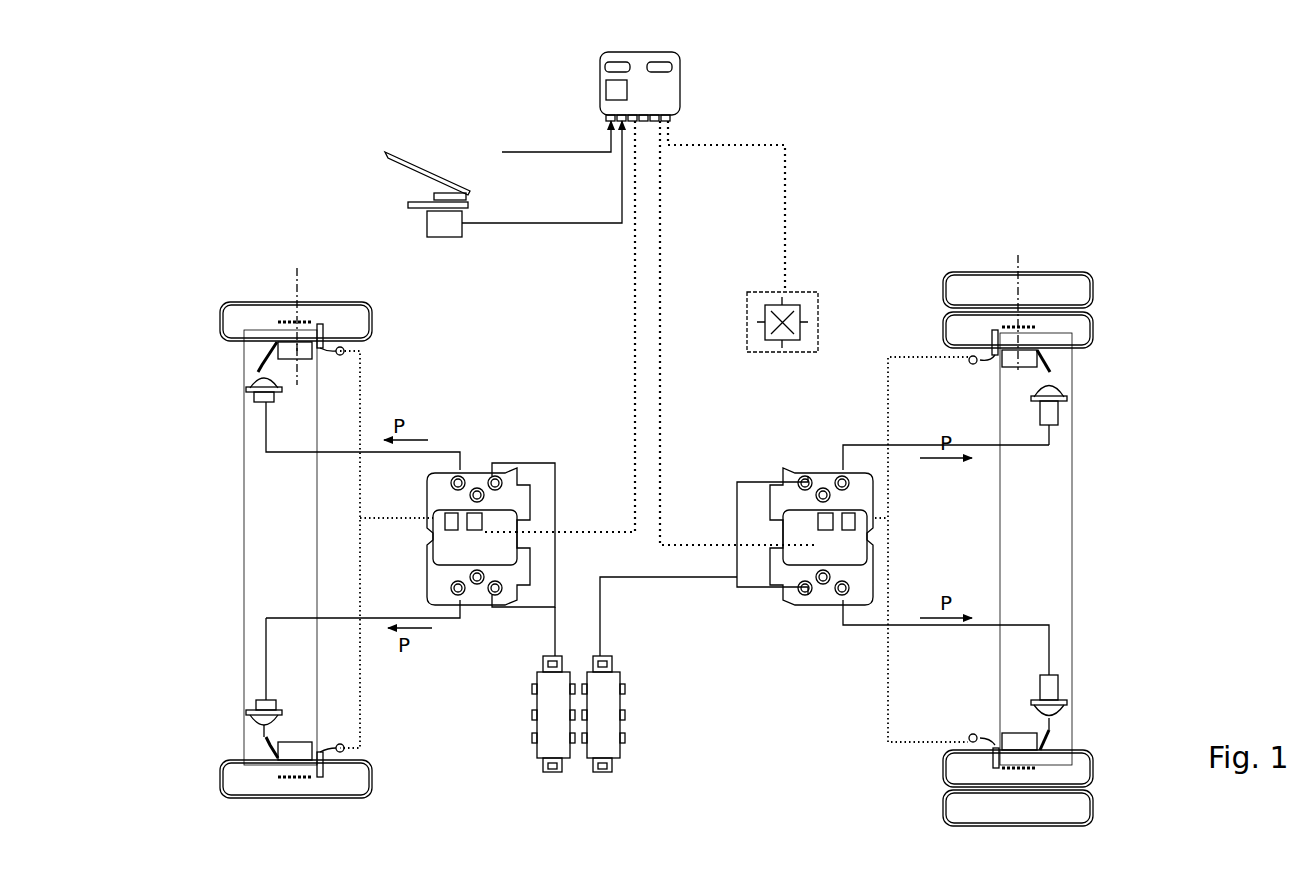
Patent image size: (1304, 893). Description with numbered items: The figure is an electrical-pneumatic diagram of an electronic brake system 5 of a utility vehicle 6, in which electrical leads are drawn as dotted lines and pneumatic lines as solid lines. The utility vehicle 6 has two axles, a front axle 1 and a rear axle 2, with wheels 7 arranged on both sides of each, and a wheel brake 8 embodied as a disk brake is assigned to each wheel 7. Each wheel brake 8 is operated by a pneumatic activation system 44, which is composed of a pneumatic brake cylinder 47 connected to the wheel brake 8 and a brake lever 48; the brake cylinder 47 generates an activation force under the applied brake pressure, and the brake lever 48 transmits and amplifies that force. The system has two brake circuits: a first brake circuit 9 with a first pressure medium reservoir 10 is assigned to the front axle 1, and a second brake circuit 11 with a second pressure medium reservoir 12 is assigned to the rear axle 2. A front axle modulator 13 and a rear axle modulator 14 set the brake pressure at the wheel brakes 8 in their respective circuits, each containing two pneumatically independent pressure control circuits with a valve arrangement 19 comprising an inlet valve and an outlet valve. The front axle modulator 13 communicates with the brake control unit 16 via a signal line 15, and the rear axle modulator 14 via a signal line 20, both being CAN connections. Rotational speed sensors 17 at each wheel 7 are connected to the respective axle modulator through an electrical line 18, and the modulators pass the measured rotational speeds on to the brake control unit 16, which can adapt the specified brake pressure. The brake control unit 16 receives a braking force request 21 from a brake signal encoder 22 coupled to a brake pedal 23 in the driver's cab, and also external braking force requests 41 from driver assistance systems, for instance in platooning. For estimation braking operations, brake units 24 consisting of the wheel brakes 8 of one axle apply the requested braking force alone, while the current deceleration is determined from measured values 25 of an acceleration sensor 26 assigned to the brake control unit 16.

The front axle 1 is at (300, 278).
The rear axle 2 is at (1018, 262).
The electronic brake system 5 is at (450, 120).
The utility vehicle 6 is at (1200, 246).
The wheel 7 is at (247, 325).
The wheel brake 8 is at (302, 368).
The first brake circuit 9 is at (555, 630).
The first pressure medium reservoir 10 is at (553, 714).
The second brake circuit 11 is at (600, 605).
The second pressure medium reservoir 12 is at (603, 714).
The front axle modulator 13 is at (445, 553).
The rear axle modulator 14 is at (860, 556).
The signal line 15 is at (635, 288).
The brake control unit 16 is at (683, 89).
The rotational speed sensor 17 is at (325, 335).
The electrical line 18 is at (360, 508).
The valve arrangement 19 is at (470, 464).
The signal line 20 is at (660, 212).
The braking force request 21 is at (622, 203).
The brake signal encoder 22 is at (427, 220).
The brake pedal 23 is at (385, 153).
The brake unit 24 is at (243, 514).
The measured values 25 is at (785, 190).
The acceleration sensor 26 is at (818, 298).
The external braking force request 41 is at (556, 150).
The pneumatic activation system 44 is at (242, 389).
The pneumatic brake cylinder 47 is at (258, 396).
The brake lever 48 is at (262, 745).